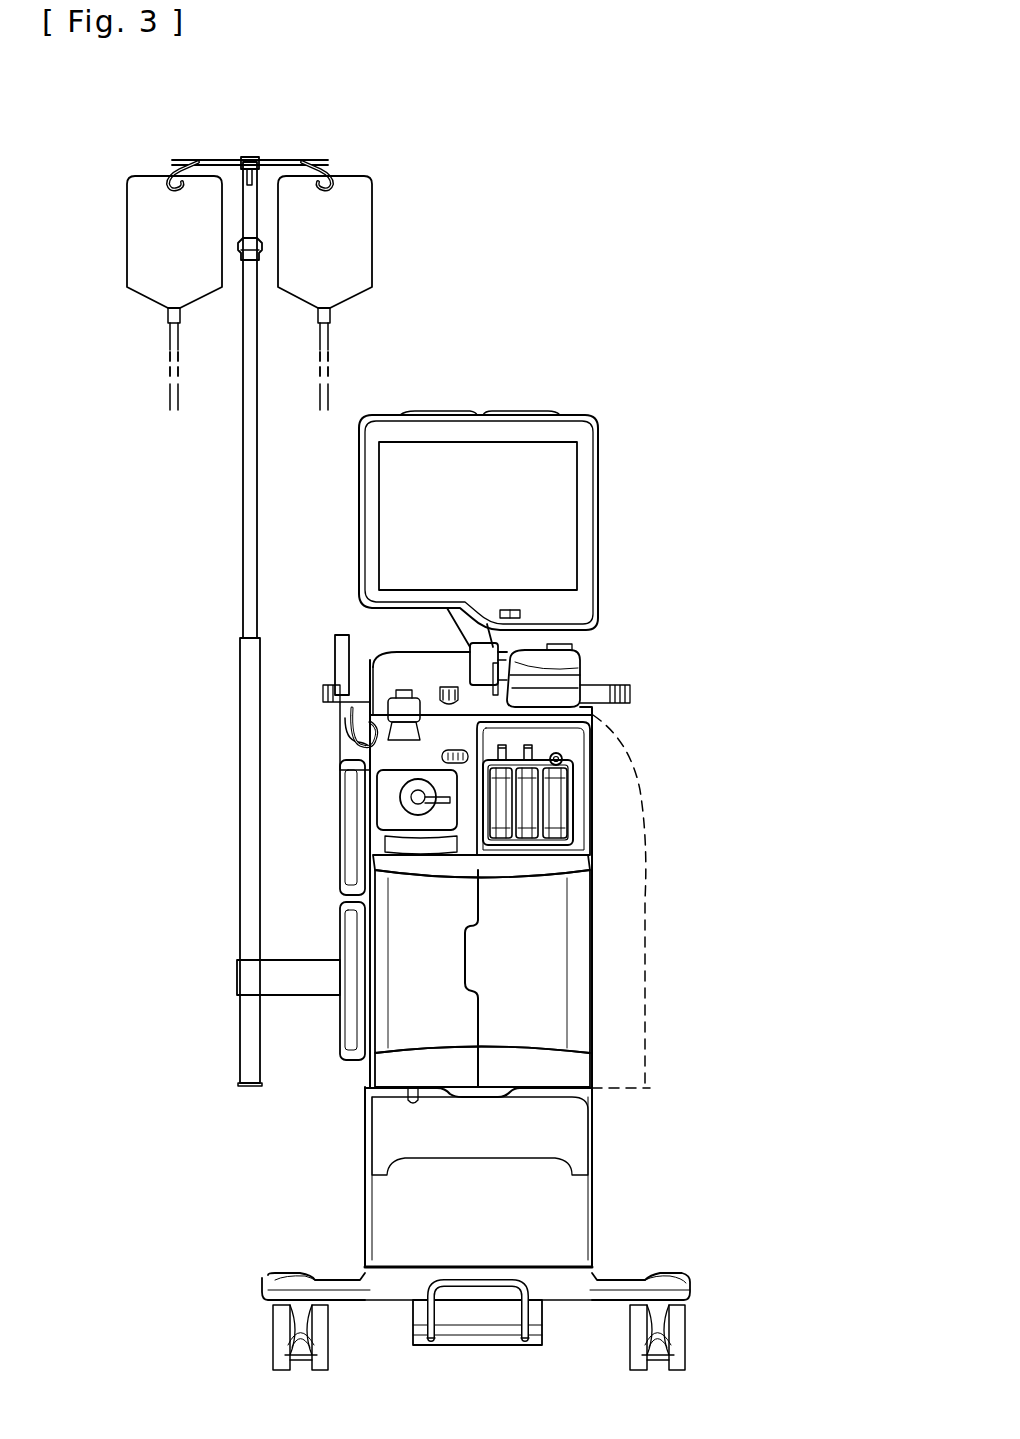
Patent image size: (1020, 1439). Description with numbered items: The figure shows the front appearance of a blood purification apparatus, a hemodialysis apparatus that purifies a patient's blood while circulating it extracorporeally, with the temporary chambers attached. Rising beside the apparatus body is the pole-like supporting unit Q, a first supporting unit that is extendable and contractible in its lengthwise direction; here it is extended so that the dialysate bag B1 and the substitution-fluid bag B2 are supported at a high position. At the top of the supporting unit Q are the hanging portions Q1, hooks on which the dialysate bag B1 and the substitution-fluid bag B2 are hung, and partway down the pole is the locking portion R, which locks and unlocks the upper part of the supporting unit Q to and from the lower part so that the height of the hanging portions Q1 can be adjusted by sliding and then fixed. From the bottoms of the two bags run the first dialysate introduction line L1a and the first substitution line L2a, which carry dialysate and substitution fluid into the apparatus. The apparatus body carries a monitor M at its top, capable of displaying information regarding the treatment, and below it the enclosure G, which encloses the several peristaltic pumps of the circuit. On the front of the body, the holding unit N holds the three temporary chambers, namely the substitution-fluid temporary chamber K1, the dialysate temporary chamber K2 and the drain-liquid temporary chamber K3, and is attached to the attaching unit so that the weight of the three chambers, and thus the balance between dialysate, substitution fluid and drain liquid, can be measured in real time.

The supporting unit Q is at (240, 738).
The hanging portions Q1 is at (180, 150).
The locking portion R is at (238, 250).
The dialysate bag B1 is at (127, 203).
The substitution-fluid bag B2 is at (372, 210).
The first dialysate introduction line L1a is at (168, 387).
The first substitution line L2a is at (330, 359).
The monitor M is at (582, 506).
The holding unit N is at (566, 762).
The substitution-fluid temporary chamber K1 is at (501, 838).
The dialysate temporary chamber K2 is at (558, 795).
The drain-liquid temporary chamber K3 is at (534, 813).
The enclosure G is at (402, 1023).